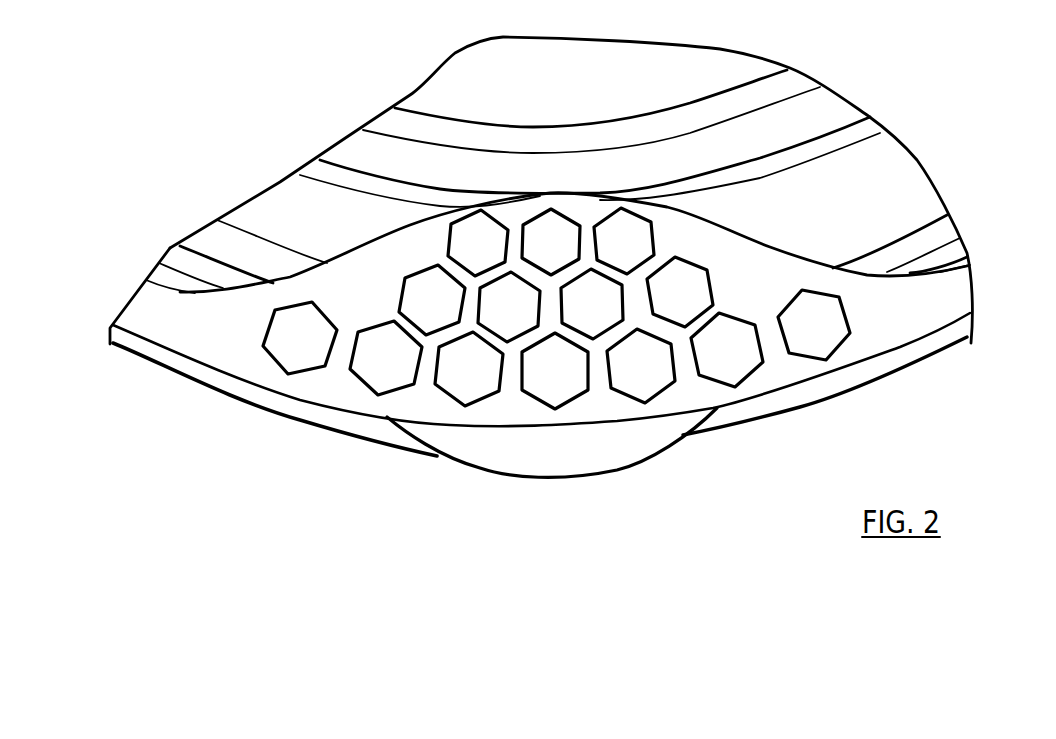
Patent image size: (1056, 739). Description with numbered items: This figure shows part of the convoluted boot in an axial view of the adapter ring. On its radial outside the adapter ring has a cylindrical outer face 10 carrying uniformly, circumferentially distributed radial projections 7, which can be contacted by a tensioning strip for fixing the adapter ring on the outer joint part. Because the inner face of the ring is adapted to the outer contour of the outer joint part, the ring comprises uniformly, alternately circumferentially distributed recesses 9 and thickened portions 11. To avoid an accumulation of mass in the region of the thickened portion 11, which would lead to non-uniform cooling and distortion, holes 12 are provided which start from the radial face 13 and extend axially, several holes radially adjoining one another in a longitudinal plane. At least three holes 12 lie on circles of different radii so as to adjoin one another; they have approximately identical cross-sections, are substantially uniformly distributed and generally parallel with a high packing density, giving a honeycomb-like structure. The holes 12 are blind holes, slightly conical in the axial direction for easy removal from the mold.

The radial projection 7 is at (581, 463).
The recess 9 is at (245, 291).
The cylindrical outer face 10 is at (300, 400).
The thickened portion 11 is at (432, 490).
The hole 12 is at (554, 269).
The radial face 13 is at (902, 327).